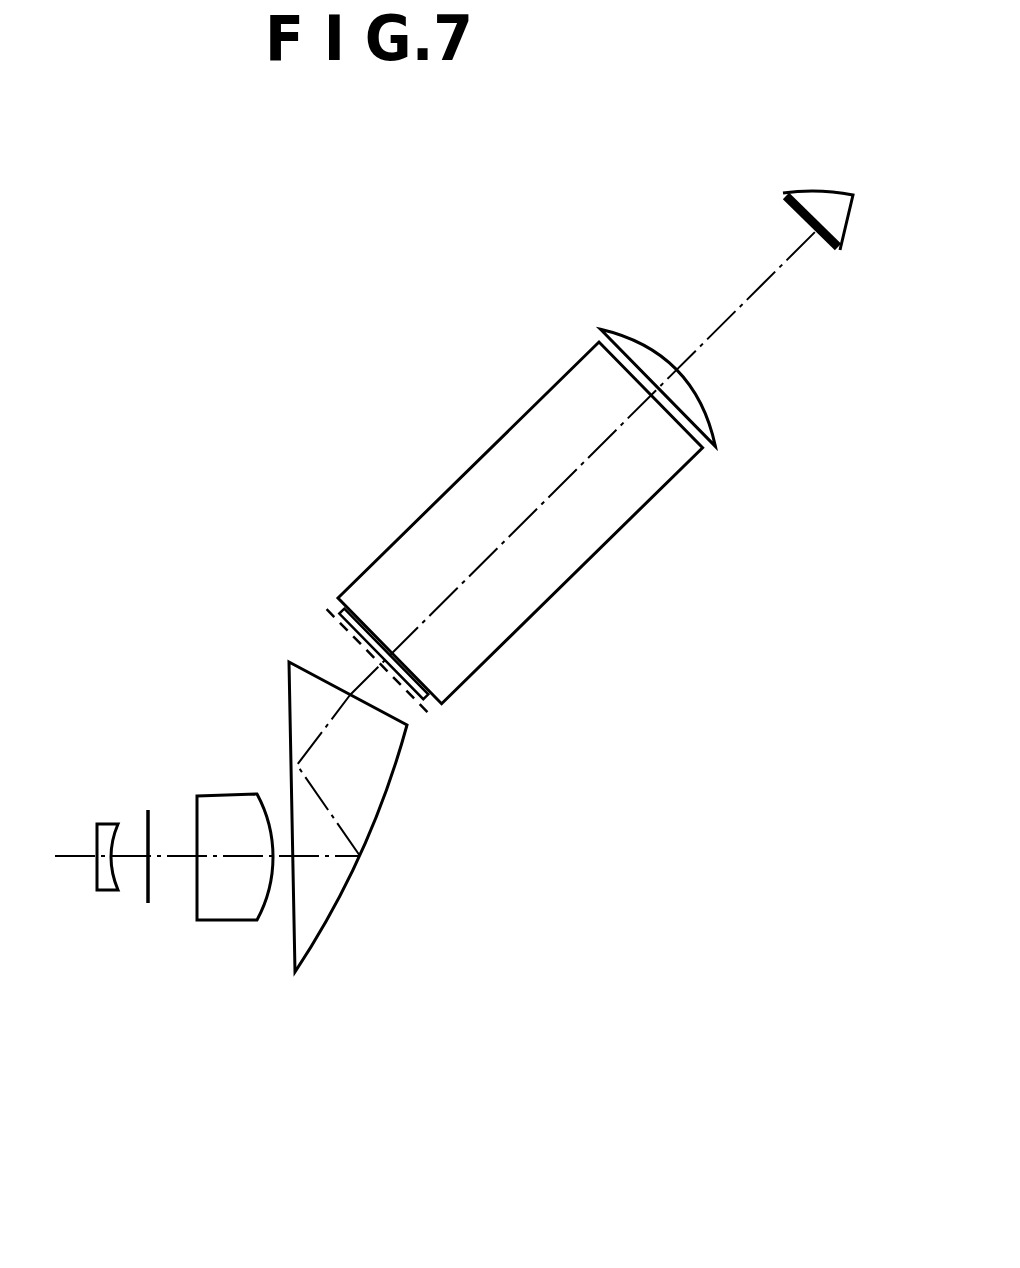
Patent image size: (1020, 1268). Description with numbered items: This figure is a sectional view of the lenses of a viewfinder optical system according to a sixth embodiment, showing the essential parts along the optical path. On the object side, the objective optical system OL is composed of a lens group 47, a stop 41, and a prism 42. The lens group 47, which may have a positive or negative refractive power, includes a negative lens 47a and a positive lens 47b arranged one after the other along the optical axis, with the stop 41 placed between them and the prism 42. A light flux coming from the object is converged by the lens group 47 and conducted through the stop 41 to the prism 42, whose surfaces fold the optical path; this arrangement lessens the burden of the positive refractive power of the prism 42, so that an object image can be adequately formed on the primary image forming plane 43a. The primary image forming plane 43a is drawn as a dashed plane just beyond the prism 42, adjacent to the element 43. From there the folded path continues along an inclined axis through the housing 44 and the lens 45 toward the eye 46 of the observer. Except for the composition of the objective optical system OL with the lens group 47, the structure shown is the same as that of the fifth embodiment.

The stop 41 is at (146, 815).
The prism 42 is at (310, 925).
The field lens plate 43 is at (437, 700).
The primary image forming plane 43a is at (338, 628).
The eyepiece body 44 is at (528, 603).
The eyepiece lens 45 is at (720, 435).
The eye 46 is at (852, 225).
The lens group 47 is at (272, 1012).
The negative lens 47a is at (108, 892).
The positive lens 47b is at (230, 922).
The objective optical system OL is at (403, 1075).